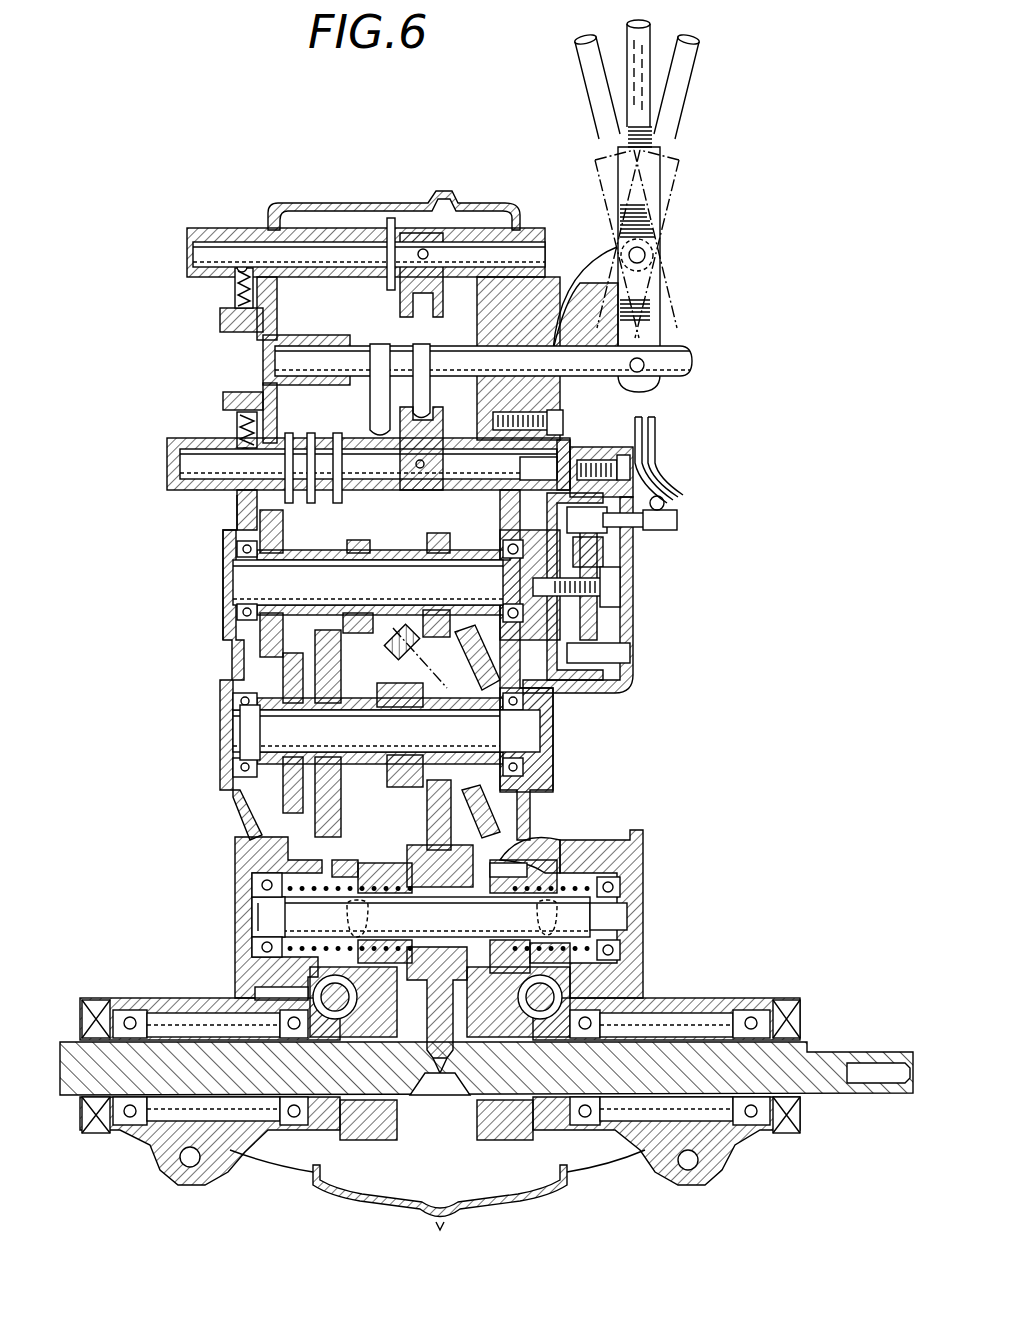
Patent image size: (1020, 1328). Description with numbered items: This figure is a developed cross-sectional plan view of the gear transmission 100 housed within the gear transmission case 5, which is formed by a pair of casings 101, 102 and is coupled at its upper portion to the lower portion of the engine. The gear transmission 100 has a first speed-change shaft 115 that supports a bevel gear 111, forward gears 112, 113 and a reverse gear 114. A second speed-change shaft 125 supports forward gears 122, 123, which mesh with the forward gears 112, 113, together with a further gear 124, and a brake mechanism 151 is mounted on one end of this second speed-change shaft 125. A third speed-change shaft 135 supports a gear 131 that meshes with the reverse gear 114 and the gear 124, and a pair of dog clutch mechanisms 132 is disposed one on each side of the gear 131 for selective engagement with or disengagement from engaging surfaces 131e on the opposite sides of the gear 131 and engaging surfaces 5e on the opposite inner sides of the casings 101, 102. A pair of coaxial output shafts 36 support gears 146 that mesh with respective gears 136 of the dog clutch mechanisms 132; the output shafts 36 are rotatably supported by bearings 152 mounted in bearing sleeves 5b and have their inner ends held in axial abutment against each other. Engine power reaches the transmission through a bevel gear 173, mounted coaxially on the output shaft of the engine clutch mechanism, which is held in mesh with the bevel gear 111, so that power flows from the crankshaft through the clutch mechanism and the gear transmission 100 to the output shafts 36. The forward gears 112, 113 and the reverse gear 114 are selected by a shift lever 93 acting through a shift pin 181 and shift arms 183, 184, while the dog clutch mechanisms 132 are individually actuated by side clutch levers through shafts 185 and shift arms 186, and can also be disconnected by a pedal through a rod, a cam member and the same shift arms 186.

The gear transmission case 5 is at (305, 208).
The shift arm 184 is at (392, 225).
The shift lever 93 is at (652, 100).
The shift pin 181 is at (430, 343).
The shift arm 183 is at (312, 433).
The forward gear 123 is at (292, 530).
The forward gear 122 is at (362, 540).
The gear 124 is at (440, 534).
The second speed-change shaft 125 is at (245, 585).
The bevel gear 173 is at (383, 643).
The brake mechanism 151 is at (636, 551).
The forward gear 113 is at (237, 672).
The forward gear 112 is at (355, 672).
The first speed-change shaft 115 is at (245, 731).
The casing 101 is at (237, 760).
The casing 102 is at (537, 752).
The gear transmission 100 is at (276, 793).
The reverse gear 114 is at (352, 797).
The gear 131 is at (430, 813).
The dog clutch mechanism 132 is at (331, 861).
The bevel gear 111 is at (510, 817).
The gear 136 is at (530, 862).
The engaging surface 5e is at (238, 866).
The third speed-change shaft 135 is at (262, 908).
The shift arm 186 is at (345, 918).
The engaging surface 131e is at (540, 925).
The output shaft 36 is at (70, 1040).
The shaft 185 is at (245, 985).
The bearing 152 is at (128, 1128).
The bearing sleeve 5b is at (220, 1185).
The gear 146 is at (365, 1177).